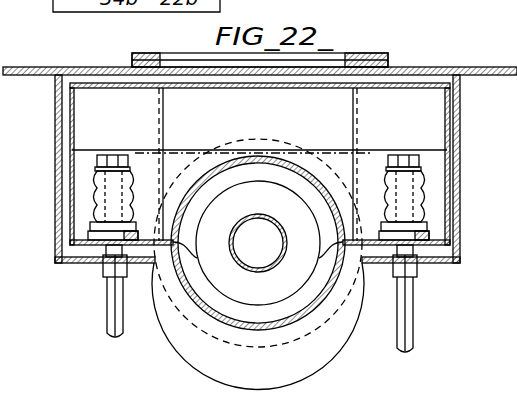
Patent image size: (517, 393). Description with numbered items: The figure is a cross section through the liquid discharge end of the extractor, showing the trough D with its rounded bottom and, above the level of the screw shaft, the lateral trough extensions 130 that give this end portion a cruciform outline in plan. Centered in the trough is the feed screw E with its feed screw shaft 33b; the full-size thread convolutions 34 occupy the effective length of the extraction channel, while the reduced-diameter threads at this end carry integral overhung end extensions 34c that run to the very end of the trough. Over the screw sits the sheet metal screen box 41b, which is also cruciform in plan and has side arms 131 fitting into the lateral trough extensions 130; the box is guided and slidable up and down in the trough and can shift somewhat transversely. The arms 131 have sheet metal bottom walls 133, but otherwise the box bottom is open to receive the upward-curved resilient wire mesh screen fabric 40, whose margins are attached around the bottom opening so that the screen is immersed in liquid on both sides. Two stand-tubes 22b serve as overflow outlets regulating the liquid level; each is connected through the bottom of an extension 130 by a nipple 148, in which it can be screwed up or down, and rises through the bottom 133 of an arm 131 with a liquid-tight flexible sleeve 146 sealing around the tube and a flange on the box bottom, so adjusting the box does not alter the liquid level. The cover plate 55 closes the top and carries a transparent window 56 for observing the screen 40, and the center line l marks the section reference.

The cover plate 55 is at (455, 66).
The transparent window 56 is at (291, 70).
The screen box 41b is at (62, 124).
The lateral trough extension 130 is at (58, 162).
The side arm of screen box 131 is at (72, 193).
The flexible sleeve 146 is at (93, 207).
The bottom wall of box arm 133 is at (82, 246).
The nipple 148 is at (113, 266).
The stand-tube 22b is at (118, 312).
The screw thread 34 is at (293, 148).
The thread end extension 34c is at (262, 306).
The feed screw shaft 33b is at (258, 243).
The strainer screen fabric 40 is at (256, 155).
The center line l is at (196, 146).
The extractor trough D is at (327, 300).
The feed screw E is at (258, 200).